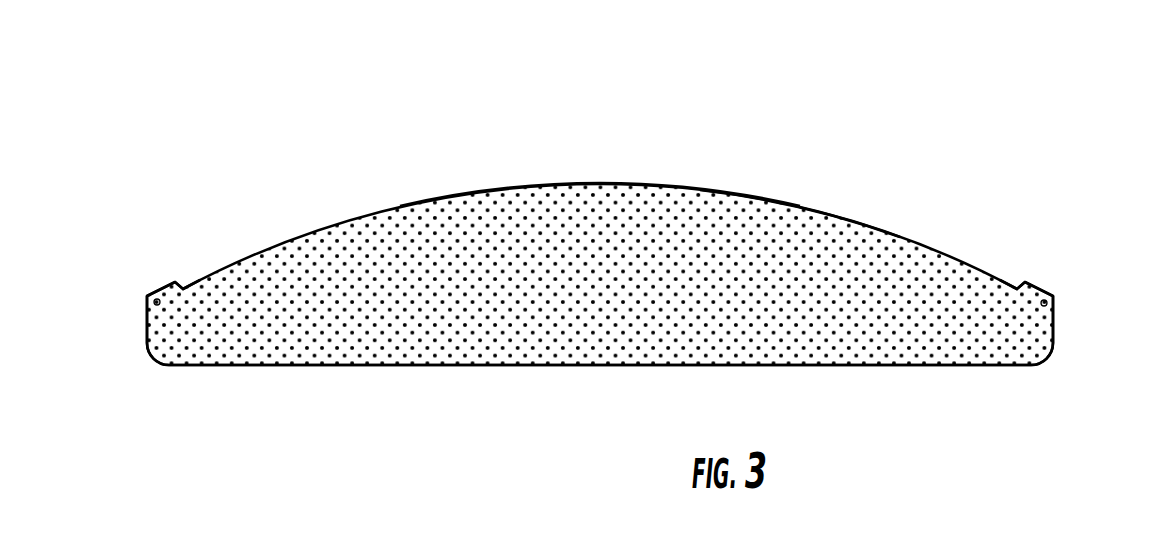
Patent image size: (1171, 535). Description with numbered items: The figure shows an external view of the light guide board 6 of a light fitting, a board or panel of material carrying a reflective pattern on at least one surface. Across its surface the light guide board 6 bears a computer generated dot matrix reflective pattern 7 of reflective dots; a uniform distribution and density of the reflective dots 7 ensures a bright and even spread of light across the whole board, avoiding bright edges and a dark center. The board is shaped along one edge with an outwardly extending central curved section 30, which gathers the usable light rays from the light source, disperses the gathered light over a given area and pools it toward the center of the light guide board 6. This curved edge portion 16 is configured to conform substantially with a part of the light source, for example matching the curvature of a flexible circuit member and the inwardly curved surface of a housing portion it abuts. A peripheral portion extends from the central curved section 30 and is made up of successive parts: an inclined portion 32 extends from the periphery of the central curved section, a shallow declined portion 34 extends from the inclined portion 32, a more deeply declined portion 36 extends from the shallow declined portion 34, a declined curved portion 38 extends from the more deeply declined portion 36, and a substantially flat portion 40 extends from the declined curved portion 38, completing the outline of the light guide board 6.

The light guide board 6 is at (662, 185).
The dot matrix reflective pattern 7 is at (475, 208).
The edge portion 16 is at (763, 200).
The outwardly extending central curved section 30 is at (550, 186).
The inclined portion 32 is at (183, 288).
The shallow declined portion 34 is at (163, 289).
The more deeply declined portion 36 is at (147, 322).
The declined curved portion 38 is at (157, 363).
The substantially flat portion 40 is at (614, 367).